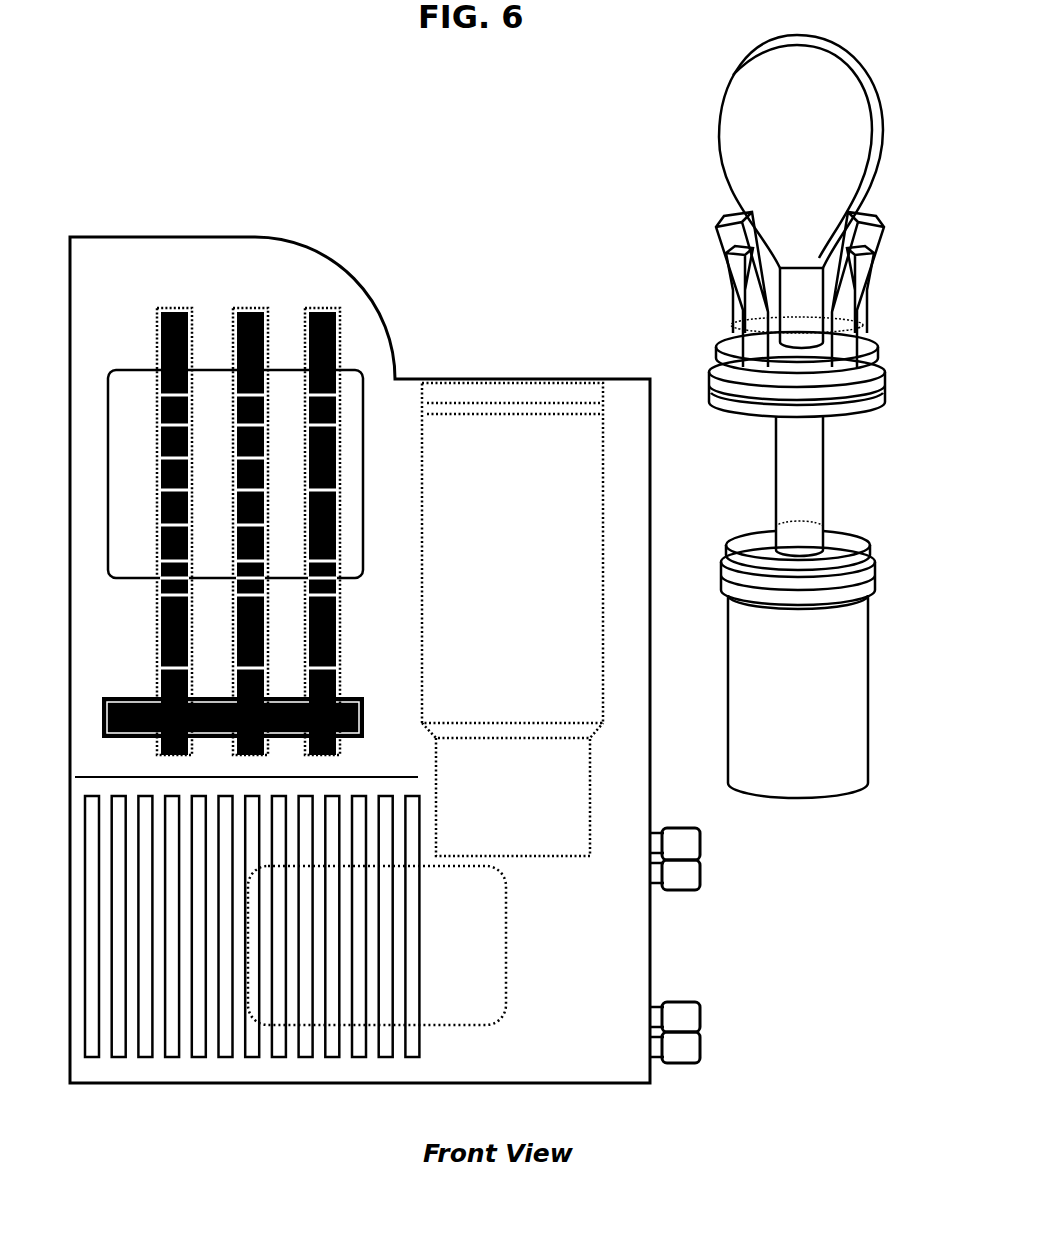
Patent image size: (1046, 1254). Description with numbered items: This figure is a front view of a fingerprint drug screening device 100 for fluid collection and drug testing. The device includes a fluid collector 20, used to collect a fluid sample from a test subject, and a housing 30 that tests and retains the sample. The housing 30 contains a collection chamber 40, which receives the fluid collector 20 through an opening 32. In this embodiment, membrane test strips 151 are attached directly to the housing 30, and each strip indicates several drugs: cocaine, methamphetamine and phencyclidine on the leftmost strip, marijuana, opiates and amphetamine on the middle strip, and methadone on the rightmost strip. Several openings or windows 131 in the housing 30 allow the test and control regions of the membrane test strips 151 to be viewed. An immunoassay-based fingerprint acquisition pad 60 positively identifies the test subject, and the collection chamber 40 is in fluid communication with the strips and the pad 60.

The fingerprint drug screening device 100 is at (424, 152).
The fluid collector 20 is at (706, 128).
The housing 30 is at (360, 290).
The opening 32 is at (520, 370).
The collection chamber 40 is at (603, 503).
The immunoassay-based fingerprint acquisition pad 60 is at (502, 1019).
The openings or windows 131 is at (333, 394).
The membrane test strips 151 is at (323, 623).